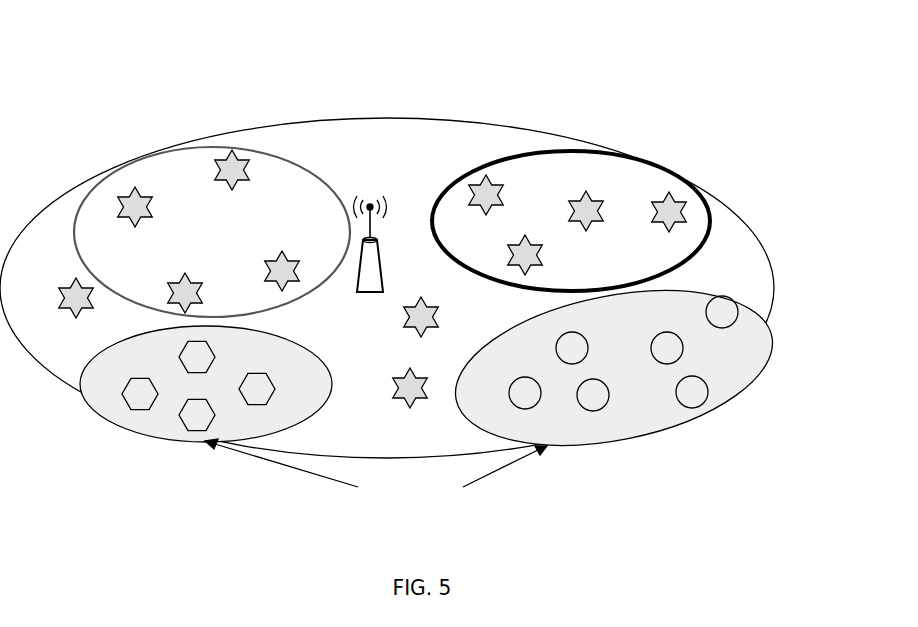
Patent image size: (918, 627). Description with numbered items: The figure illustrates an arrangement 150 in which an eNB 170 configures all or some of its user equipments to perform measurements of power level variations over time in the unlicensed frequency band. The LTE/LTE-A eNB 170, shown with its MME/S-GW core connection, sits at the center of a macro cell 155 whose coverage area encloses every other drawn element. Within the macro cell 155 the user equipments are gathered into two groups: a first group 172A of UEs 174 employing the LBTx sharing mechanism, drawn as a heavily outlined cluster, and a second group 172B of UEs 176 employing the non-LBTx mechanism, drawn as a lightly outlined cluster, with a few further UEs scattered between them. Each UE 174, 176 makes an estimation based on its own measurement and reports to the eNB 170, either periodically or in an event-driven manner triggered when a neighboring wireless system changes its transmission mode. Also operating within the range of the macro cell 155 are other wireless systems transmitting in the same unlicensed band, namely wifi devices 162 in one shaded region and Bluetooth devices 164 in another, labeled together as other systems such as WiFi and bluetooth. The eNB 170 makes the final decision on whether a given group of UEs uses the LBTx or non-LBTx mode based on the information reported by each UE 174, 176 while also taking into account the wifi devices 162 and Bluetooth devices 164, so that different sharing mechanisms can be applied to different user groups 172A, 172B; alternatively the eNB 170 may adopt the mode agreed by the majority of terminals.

The unlicensed frequency band measurement arrangement 150 is at (378, 78).
The macro cell 155 is at (772, 312).
The wifi devices 162 is at (82, 403).
The Bluetooth devices 164 is at (772, 323).
The eNB 170 is at (383, 257).
The LBTx group 172A is at (640, 155).
The non-LBTx group 172B is at (133, 155).
The UE of LBTx group 174 is at (500, 178).
The UE of non-LBTx group 176 is at (157, 203).